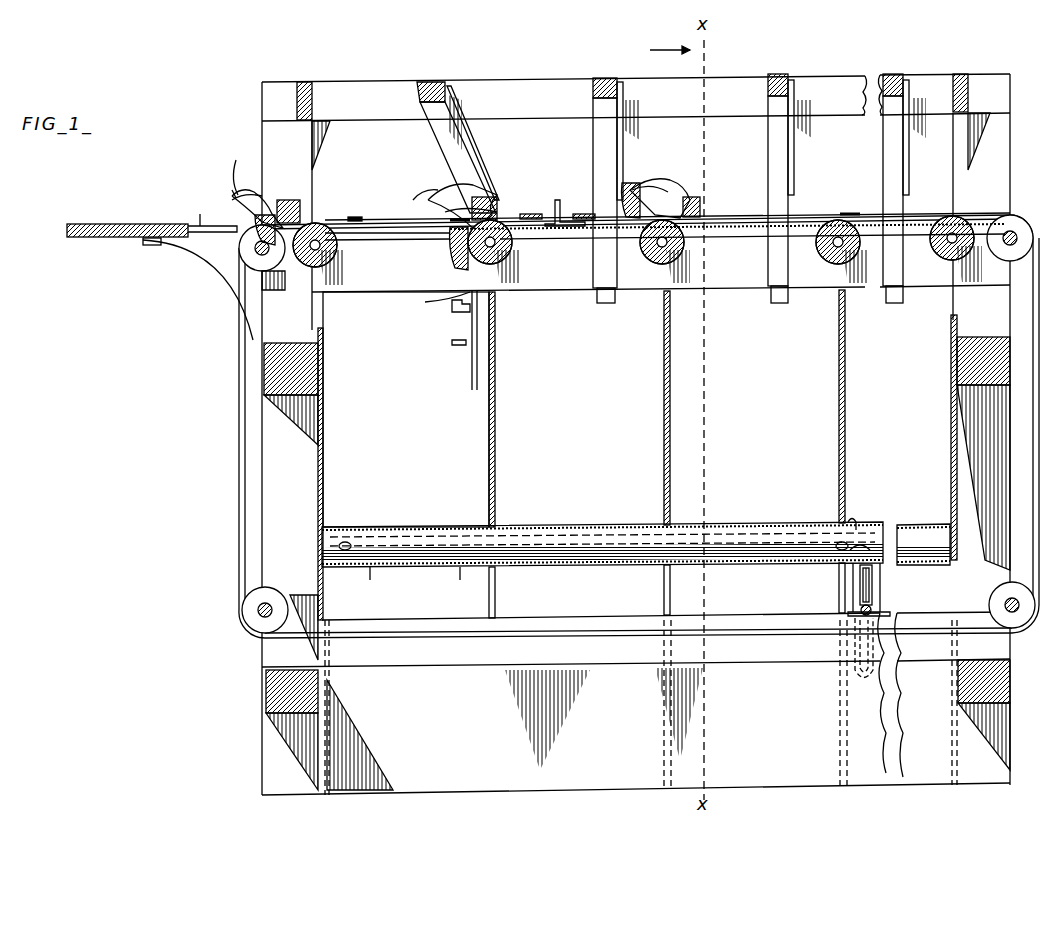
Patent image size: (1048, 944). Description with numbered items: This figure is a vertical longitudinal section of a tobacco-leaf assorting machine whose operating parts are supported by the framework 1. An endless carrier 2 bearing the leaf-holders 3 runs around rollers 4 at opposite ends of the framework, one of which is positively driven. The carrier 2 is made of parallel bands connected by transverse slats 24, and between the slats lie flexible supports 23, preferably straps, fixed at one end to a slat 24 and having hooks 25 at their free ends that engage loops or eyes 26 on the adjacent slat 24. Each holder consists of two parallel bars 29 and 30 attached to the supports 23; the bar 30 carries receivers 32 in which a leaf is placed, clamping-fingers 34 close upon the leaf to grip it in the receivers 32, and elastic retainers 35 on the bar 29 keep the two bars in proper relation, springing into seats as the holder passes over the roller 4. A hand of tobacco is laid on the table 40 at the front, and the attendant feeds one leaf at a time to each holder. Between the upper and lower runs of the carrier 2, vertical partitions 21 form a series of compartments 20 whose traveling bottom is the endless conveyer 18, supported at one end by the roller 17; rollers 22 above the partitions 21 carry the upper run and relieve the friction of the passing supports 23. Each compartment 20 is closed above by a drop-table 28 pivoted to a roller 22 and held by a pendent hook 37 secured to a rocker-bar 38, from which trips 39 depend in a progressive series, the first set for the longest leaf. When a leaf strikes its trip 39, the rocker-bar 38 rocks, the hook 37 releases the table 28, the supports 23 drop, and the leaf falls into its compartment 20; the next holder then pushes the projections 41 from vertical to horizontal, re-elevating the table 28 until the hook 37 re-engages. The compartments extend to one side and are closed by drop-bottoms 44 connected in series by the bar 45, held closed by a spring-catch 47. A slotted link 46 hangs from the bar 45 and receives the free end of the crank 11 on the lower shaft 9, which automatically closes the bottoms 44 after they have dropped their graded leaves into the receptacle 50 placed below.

The framework 1 is at (968, 437).
The carrier 2 is at (240, 422).
The leaf-holders 3 is at (448, 196).
The rollers 4 is at (250, 256).
The lower shaft 9 is at (862, 616).
The crank 11 is at (872, 585).
The roller 17 is at (400, 532).
The endless conveyer 18 is at (570, 528).
The compartments 20 is at (543, 409).
The vertical partitions 21 is at (495, 417).
The rollers 22 is at (308, 265).
The flexible supports 23 is at (412, 228).
The transverse slats 24 is at (548, 200).
The hooks 25 is at (562, 212).
The loops or eyes 26 is at (387, 232).
The drop-table 28 is at (576, 235).
The bar 29 is at (300, 203).
The bar 30 is at (255, 216).
The receivers 32 is at (430, 297).
The clamping-fingers 34 is at (262, 200).
The retainers 35 is at (331, 169).
The pendent hooks 37 is at (430, 135).
The rocker-bars 38 is at (430, 82).
The trips 39 is at (470, 158).
The table 40 is at (160, 270).
The projections 41 is at (462, 218).
The drop-bottoms 44 is at (368, 582).
The bar 45 is at (458, 582).
The slotted link 46 is at (862, 688).
The spring-catch 47 is at (854, 522).
The receptacle 50 is at (604, 719).